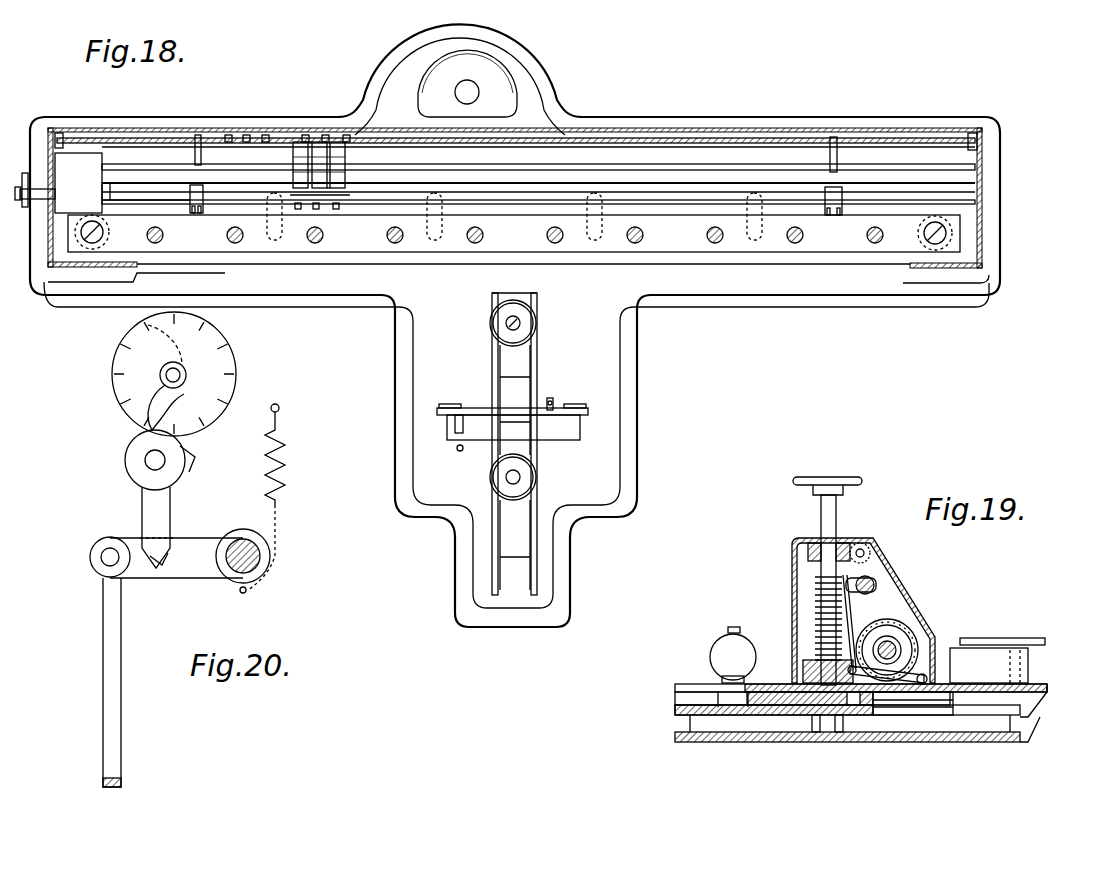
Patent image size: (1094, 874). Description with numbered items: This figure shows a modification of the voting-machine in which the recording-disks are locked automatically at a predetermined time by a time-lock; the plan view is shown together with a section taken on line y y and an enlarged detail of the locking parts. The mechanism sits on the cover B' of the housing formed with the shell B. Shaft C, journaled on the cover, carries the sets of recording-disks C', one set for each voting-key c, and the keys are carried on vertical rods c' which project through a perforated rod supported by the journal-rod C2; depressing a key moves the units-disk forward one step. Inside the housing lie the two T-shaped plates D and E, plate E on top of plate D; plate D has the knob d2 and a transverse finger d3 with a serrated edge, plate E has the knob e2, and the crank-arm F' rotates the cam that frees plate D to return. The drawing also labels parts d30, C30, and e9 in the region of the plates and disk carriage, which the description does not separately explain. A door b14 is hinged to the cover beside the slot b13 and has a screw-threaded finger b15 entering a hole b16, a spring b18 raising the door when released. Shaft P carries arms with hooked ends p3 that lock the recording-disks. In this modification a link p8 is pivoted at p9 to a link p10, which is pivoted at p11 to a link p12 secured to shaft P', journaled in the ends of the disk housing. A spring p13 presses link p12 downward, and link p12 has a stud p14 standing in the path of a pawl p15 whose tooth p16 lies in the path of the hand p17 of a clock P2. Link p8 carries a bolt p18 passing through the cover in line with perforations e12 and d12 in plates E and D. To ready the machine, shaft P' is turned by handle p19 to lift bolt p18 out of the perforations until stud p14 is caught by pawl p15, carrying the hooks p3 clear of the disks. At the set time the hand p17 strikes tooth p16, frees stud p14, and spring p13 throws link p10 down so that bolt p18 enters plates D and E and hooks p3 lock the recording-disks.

In FIG. 18, the cover B' is at (515, 325).
In FIG. 19, the cover B' is at (1033, 714).
In FIG. 18, the journal-rod C2 is at (985, 216).
In FIG. 19, the journal-rod C2 is at (792, 576).
In FIG. 18, the shaft P is at (516, 114).
In FIG. 18, the shaft C is at (538, 127).
In FIG. 19, the shaft C is at (907, 626).
In FIG. 18, the shaft P' is at (538, 141).
In FIG. 20, the shaft P' is at (265, 561).
In FIG. 18, the recording-disks C' is at (514, 162).
In FIG. 18, the link p8 is at (202, 160).
In FIG. 19, the link p8 is at (897, 682).
In FIG. 18, the hooked ends p3 is at (245, 134).
In FIG. 19, the hooked ends p3 is at (912, 648).
In FIG. 18, the clock P2 is at (54, 170).
In FIG. 20, the clock P2 is at (240, 380).
In FIG. 19, the clock P2 is at (872, 553).
In FIG. 18, the pawl p15 is at (100, 204).
In FIG. 20, the pawl p15 is at (172, 498).
In FIG. 18, the link p12 is at (120, 198).
In FIG. 20, the link p12 is at (183, 580).
In FIG. 18, the handle p19 is at (19, 202).
In FIG. 18, the section line y is at (540, 62).
In FIG. 18, the knob d2 is at (492, 322).
In FIG. 18, the upper band d30 is at (504, 364).
In FIG. 18, the lower band C30 is at (505, 537).
In FIG. 18, the knob e2 is at (500, 484).
In FIG. 18, the door b14 is at (480, 408).
In FIG. 18, the slot b13 is at (555, 430).
In FIG. 18, the screw-threaded finger b15 is at (456, 436).
In FIG. 18, the hole b16 is at (460, 452).
In FIG. 18, the spring b18 is at (556, 398).
In FIG. 20, the hand p17 is at (232, 376).
In FIG. 20, the tooth p16 is at (192, 412).
In FIG. 20, the stud p14 is at (176, 550).
In FIG. 20, the pivot p11 is at (108, 546).
In FIG. 20, the spring p13 is at (290, 470).
In FIG. 20, the link p10 is at (122, 640).
In FIG. 19, the link p10 is at (858, 618).
In FIG. 19, the voting-key c is at (844, 482).
In FIG. 19, the vertical rod c' is at (847, 590).
In FIG. 19, the pivot p9 is at (824, 657).
In FIG. 19, the bolt p18 is at (826, 684).
In FIG. 19, the crank-arm F' is at (997, 640).
In FIG. 19, the plate E is at (674, 700).
In FIG. 19, the plate D is at (676, 712).
In FIG. 19, the transverse finger d3 is at (942, 718).
In FIG. 19, the block e9 is at (955, 702).
In FIG. 19, the shell B is at (863, 739).
In FIG. 19, the perforation e12 is at (837, 718).
In FIG. 19, the perforation d12 is at (850, 718).